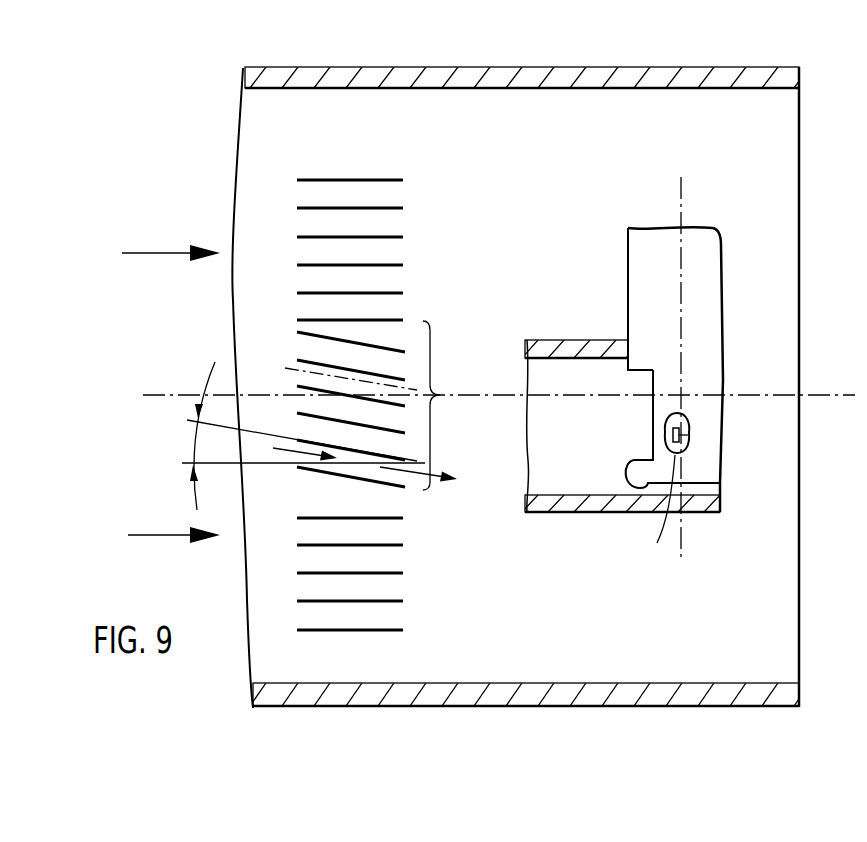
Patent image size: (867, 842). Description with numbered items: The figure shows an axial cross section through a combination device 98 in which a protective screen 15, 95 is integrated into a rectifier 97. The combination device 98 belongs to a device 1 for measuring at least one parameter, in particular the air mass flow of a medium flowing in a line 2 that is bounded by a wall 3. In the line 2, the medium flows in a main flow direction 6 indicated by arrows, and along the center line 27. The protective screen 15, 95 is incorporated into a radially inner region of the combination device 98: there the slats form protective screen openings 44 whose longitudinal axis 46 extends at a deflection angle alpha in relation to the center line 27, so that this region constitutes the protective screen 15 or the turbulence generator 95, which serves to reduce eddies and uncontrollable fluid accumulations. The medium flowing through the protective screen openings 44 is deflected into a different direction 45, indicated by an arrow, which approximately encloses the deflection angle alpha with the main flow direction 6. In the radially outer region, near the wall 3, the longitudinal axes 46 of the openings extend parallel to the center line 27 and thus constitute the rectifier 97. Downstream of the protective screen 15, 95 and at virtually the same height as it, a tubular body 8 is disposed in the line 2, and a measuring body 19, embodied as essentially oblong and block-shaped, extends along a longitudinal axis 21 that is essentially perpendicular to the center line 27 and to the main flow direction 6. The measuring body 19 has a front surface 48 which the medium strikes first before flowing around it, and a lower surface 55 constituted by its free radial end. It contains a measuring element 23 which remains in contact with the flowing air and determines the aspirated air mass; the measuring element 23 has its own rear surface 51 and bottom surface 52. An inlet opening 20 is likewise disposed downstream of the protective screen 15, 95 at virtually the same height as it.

The device 1 is at (431, 410).
The line 2 is at (280, 130).
The wall 3 is at (349, 697).
The main flow direction 6 is at (137, 252).
The tubular body 8 is at (637, 430).
The protective screen 15 is at (351, 392).
The turbulence generator 95 is at (351, 392).
The measuring body 19 is at (675, 396).
The inlet opening 20 is at (652, 425).
The longitudinal axis 21 is at (679, 205).
The measuring element 23 is at (725, 439).
The center line 27 is at (158, 393).
The protective screen openings 44 is at (310, 348).
The direction 45 is at (290, 462).
The longitudinal axis 46 is at (360, 378).
The front surface 48 is at (627, 290).
The rear surface 51 is at (690, 435).
The bottom surface 52 is at (651, 510).
The lower surface 55 is at (698, 491).
The rectifier 97 is at (397, 588).
The combination device 98 is at (392, 178).
The deflection angle alpha is at (195, 440).